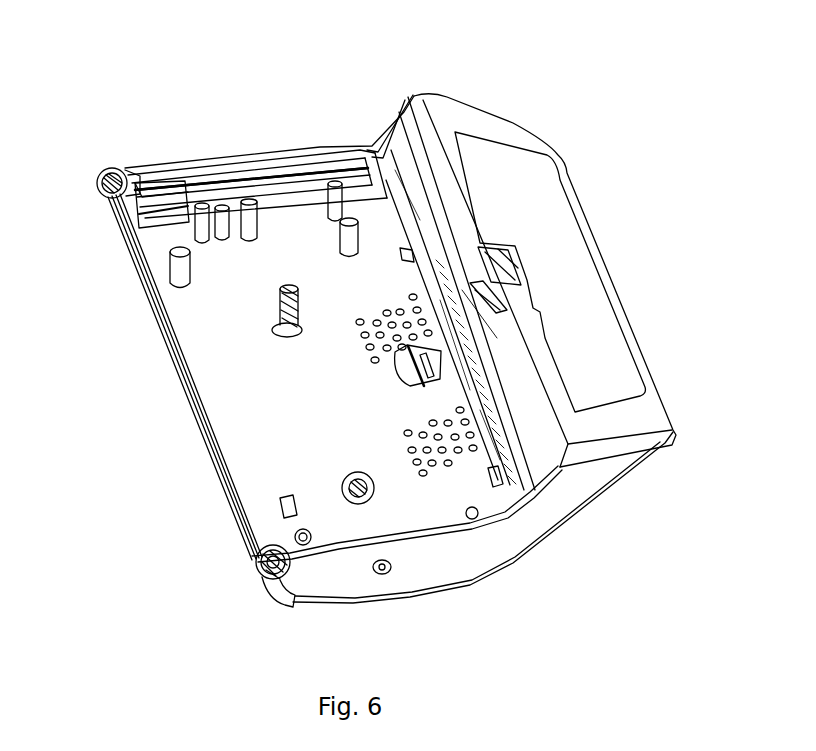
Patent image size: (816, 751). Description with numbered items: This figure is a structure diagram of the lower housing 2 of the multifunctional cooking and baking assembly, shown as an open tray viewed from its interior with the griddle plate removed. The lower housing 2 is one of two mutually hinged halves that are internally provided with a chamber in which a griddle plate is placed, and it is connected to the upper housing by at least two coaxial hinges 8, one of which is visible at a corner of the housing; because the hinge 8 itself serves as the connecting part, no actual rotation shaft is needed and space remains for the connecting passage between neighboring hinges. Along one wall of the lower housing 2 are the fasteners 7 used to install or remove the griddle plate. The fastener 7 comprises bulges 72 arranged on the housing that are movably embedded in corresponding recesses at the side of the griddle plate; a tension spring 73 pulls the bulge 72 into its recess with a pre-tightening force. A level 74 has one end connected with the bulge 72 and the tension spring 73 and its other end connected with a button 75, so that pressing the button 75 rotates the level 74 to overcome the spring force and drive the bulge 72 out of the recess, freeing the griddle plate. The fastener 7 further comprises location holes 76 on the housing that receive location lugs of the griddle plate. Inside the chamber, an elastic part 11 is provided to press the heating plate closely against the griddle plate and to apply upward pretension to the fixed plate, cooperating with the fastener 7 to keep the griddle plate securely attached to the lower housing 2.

The lower housing 2 is at (243, 397).
The fastener 7 is at (296, 55).
The hinge 8 is at (258, 567).
The elastic part 11 is at (272, 306).
The bulge 72 is at (182, 197).
The tension spring 73 is at (113, 162).
The level 74 is at (233, 200).
The button 75 is at (262, 197).
The location hole 76 is at (327, 183).